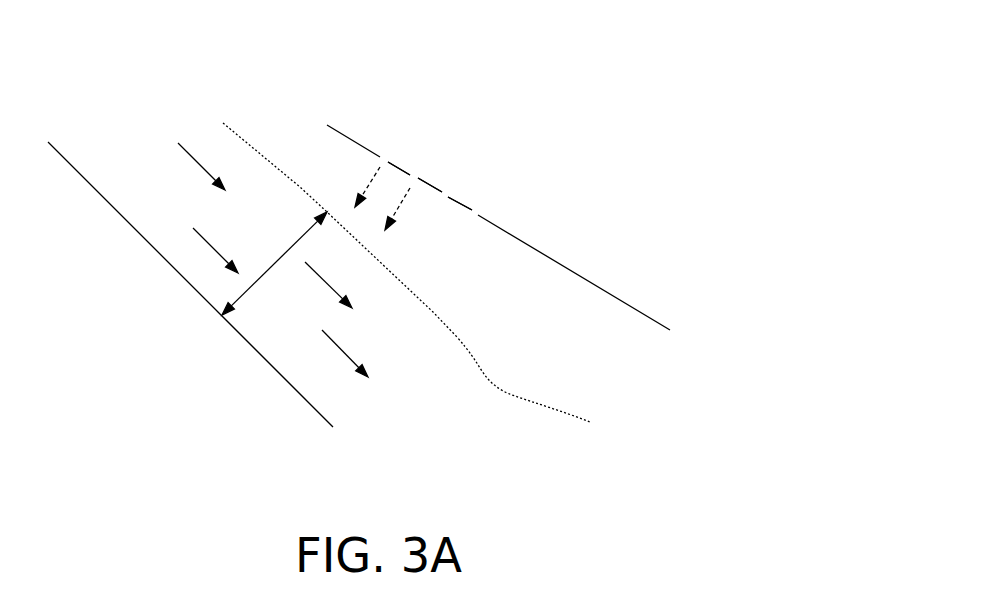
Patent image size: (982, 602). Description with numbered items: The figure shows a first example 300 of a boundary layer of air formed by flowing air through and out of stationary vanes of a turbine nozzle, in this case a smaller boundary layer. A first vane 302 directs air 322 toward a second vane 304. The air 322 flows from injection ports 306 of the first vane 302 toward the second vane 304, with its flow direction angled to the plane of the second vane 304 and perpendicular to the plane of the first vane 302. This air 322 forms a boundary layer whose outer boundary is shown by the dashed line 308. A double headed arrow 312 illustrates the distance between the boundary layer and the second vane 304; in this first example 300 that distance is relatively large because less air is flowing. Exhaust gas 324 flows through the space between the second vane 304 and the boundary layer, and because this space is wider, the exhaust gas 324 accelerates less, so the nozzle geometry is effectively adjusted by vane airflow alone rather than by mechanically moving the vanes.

The first example 300 is at (605, 44).
The first vane 302 is at (630, 303).
The second vane 304 is at (68, 160).
The injection ports 306 is at (424, 147).
The dashed line 308 is at (247, 138).
The double headed arrow 312 is at (285, 253).
The air 322 is at (402, 205).
The exhaust gas 324 is at (352, 353).